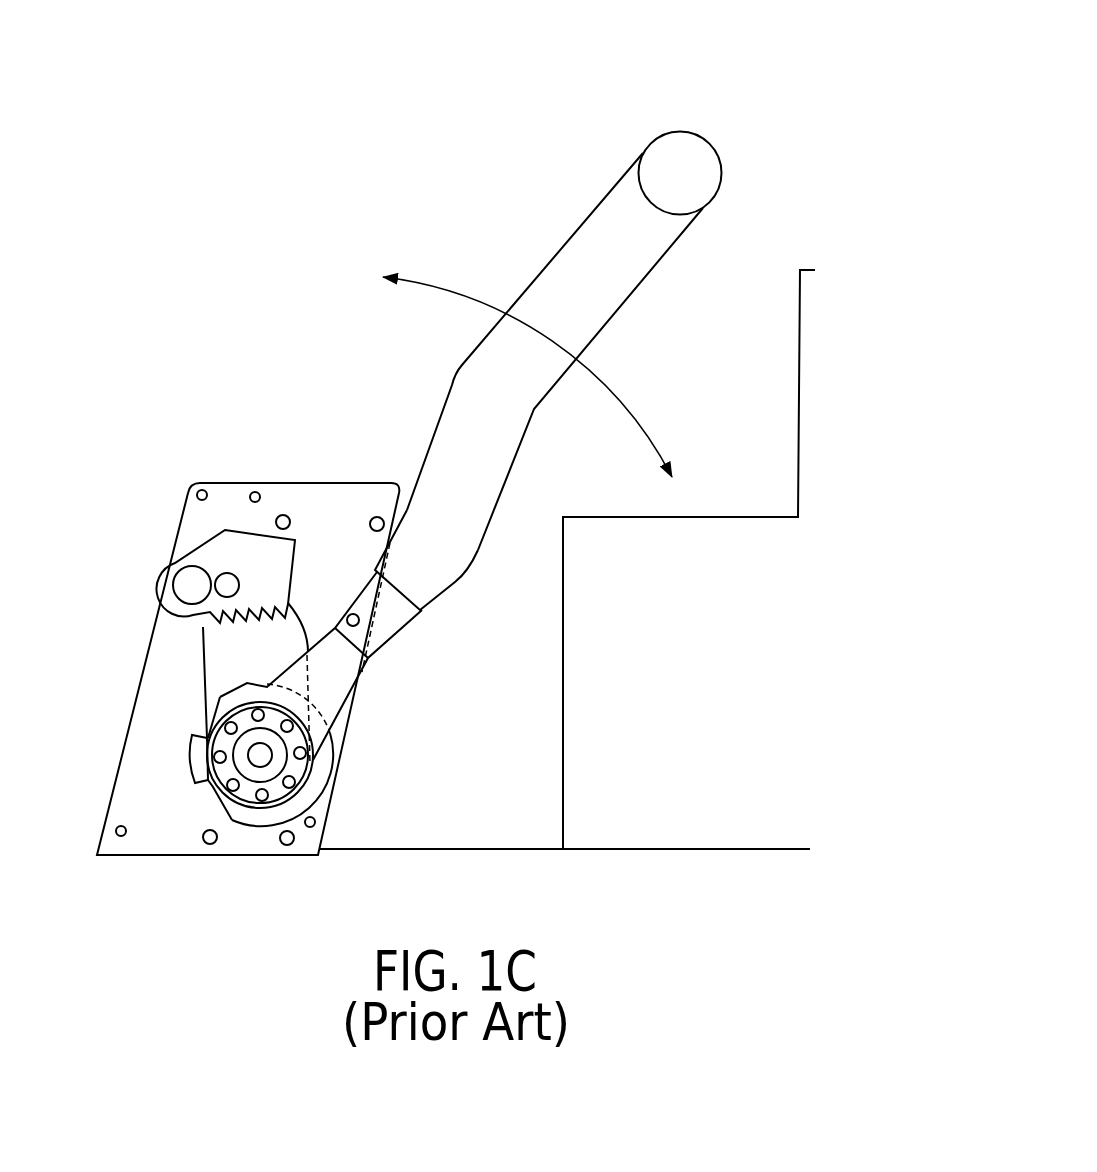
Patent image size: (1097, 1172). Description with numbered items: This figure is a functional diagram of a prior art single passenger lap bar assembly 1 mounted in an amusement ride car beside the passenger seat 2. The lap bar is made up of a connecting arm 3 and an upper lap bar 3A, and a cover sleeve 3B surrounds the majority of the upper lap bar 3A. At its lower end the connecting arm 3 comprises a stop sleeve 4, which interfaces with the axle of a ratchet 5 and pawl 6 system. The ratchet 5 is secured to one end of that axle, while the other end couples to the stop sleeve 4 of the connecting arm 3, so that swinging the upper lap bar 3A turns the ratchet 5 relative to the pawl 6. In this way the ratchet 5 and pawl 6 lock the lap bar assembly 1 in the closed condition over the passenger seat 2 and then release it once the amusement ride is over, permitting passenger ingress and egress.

The lap bar assembly 1 is at (446, 226).
The passenger seat 2 is at (777, 492).
The connecting arm 3 is at (576, 352).
The upper lap bar 3A is at (733, 141).
The cover sleeve 3B is at (630, 258).
The stop sleeve 4 is at (341, 729).
The ratchet 5 is at (203, 666).
The pawl 6 is at (241, 533).